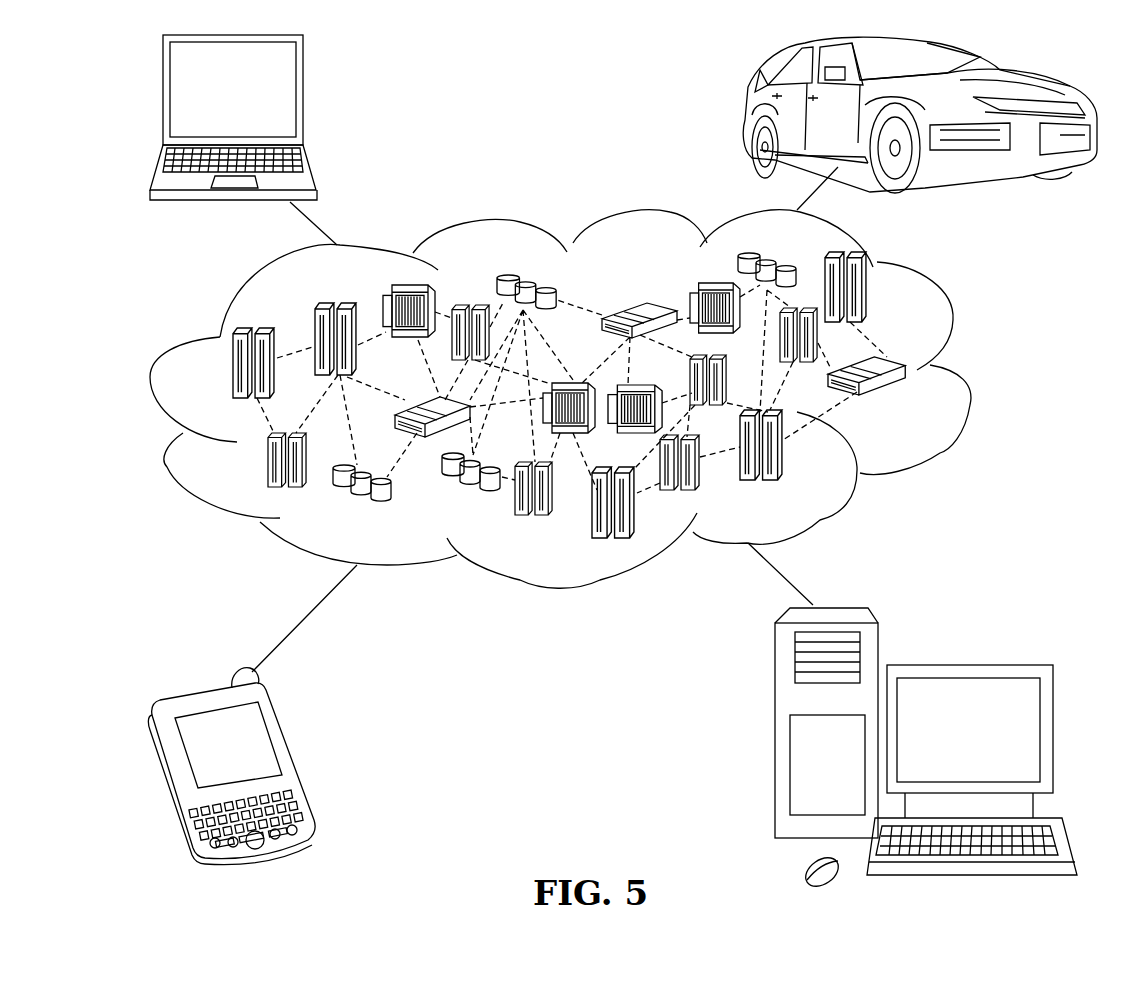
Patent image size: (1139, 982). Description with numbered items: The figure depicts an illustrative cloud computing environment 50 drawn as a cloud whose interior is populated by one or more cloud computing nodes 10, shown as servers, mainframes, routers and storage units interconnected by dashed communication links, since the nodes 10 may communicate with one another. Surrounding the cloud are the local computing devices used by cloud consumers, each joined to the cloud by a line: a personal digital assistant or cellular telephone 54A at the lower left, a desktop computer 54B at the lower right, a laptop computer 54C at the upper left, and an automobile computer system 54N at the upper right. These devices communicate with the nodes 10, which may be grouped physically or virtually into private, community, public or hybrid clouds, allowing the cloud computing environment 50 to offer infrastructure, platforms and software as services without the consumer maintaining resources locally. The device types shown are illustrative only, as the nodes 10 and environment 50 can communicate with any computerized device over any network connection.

The personal digital assistant (PDA) or cellular telephone 54A is at (297, 762).
The desktop computer 54B is at (968, 665).
The laptop computer 54C is at (303, 97).
The automobile computer system 54N is at (742, 108).
The cloud computing environment 50 is at (589, 399).
The cloud computing node 10 is at (915, 407).